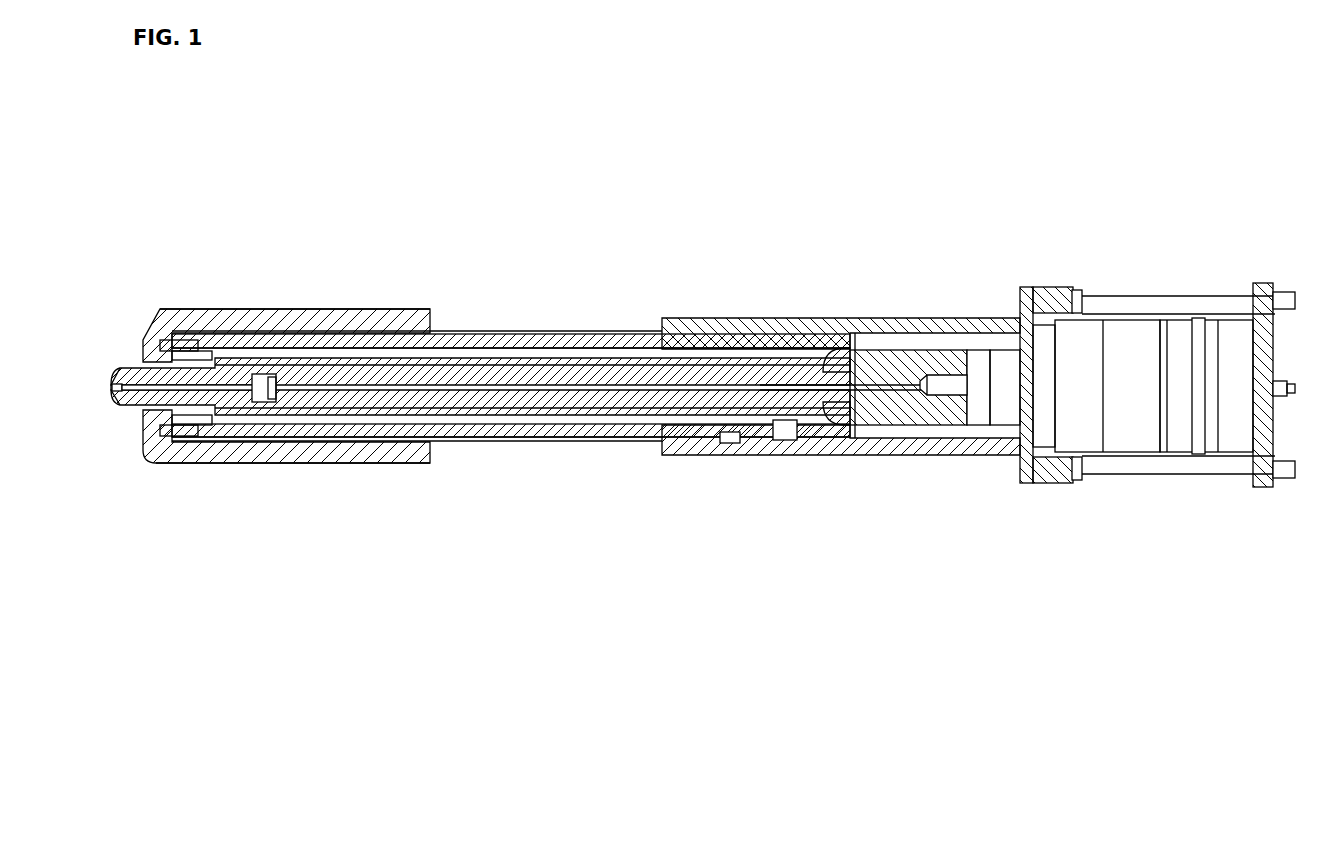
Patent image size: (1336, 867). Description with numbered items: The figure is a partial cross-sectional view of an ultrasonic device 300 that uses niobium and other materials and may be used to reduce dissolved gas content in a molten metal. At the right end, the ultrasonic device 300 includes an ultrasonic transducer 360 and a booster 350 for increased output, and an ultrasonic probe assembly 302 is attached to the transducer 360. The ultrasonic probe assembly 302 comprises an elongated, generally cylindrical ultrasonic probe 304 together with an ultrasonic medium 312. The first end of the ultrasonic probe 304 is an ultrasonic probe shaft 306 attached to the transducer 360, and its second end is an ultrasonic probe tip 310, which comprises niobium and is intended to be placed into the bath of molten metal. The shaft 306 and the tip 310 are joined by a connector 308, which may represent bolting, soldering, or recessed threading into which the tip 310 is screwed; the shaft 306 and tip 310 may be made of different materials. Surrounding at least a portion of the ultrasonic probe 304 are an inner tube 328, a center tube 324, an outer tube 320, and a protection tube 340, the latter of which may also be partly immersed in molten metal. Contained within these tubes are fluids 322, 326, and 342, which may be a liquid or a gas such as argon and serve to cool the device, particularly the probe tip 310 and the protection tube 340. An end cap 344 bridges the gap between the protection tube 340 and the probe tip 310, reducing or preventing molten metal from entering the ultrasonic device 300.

The ultrasonic device 300 is at (987, 138).
The ultrasonic probe assembly 302 is at (921, 416).
The ultrasonic probe 304 is at (478, 370).
The ultrasonic probe shaft 306 is at (593, 400).
The connector 308 is at (262, 392).
The ultrasonic probe tip 310 is at (126, 410).
The ultrasonic medium 312 is at (632, 387).
The outer tube 320 is at (495, 440).
The fluid 322 is at (415, 433).
The center tube 324 is at (383, 430).
The fluid 326 is at (320, 434).
The inner tube 328 is at (515, 363).
The protection tube 340 is at (222, 313).
The fluid 342 is at (272, 313).
The end cap 344 is at (140, 358).
The booster 350 is at (1124, 413).
The ultrasonic transducer 360 is at (1181, 348).